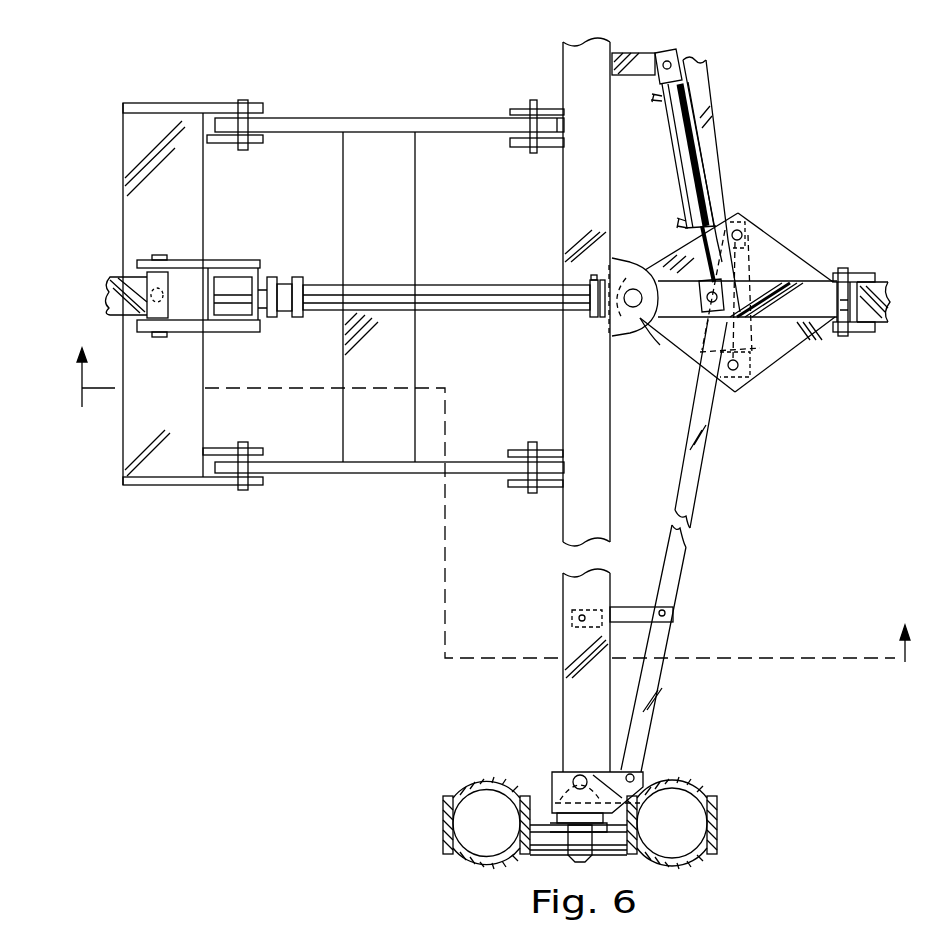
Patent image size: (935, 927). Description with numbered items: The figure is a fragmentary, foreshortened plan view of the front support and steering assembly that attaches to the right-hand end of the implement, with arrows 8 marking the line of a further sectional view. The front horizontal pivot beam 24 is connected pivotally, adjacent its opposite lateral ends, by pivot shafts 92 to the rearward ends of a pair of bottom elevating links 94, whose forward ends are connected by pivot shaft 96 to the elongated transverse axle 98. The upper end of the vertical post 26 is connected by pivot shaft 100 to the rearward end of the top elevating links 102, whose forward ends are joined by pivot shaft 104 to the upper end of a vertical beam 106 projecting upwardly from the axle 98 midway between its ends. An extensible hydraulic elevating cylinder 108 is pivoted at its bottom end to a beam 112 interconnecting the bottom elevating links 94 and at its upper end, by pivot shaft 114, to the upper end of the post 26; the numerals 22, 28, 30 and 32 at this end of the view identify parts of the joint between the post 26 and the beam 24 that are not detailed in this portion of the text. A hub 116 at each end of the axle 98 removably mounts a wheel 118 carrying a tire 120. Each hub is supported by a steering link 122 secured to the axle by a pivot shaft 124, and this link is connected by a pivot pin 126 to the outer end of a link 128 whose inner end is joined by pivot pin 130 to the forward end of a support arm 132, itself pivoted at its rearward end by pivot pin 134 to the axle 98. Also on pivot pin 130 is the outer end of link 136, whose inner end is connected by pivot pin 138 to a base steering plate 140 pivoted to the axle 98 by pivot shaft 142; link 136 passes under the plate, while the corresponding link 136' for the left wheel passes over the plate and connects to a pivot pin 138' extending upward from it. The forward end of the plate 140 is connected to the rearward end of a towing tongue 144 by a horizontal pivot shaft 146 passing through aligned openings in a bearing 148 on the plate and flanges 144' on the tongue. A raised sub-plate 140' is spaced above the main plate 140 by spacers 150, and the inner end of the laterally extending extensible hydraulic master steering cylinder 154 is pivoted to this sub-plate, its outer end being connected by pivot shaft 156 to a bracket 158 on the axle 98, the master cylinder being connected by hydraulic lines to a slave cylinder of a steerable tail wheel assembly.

The section line 8- 8 is at (491, 510).
The pivot pin 22 is at (147, 300).
The front horizontal pivot beam 24 is at (123, 200).
The vertical post 26 is at (252, 275).
The bracket plates 28 is at (200, 260).
The retaining nut 30 is at (152, 256).
The support member 32 is at (110, 290).
The pivot shafts 92 is at (240, 100).
The bottom elevating links 94 is at (308, 118).
The pivot shaft 96 is at (533, 100).
The transverse axle 98 is at (564, 55).
The pivot shaft 100 is at (300, 277).
The top elevating links 102 is at (474, 290).
The pivot shaft 104 is at (592, 266).
The vertical beam 106 is at (590, 304).
The extensible hydraulic elevating cylinder 108 is at (288, 318).
The beam 112 is at (416, 190).
The pivot shaft 114 is at (278, 277).
The hub 116 is at (590, 852).
The wheel 118 is at (552, 852).
The tire 120 is at (443, 822).
The steering link 122 is at (552, 790).
The pivot shaft 124 is at (577, 776).
The pivot pin 126 is at (638, 780).
The link 128 is at (652, 702).
The pivot pin 130 is at (668, 612).
The support arm 132 is at (640, 622).
The pivot pin 134 is at (572, 618).
The link 136 is at (681, 546).
The link 136' is at (725, 184).
The pivot pin 138 is at (737, 292).
The pivot pin 138' is at (751, 382).
The base steering plate 140 is at (747, 272).
The raised sub-plate 140' is at (647, 353).
The pivot shaft 142 is at (645, 318).
The towing tongue 144 is at (895, 292).
The flanges 144' is at (869, 294).
The horizontal pivot shaft 146 is at (843, 268).
The bearing 148 is at (832, 320).
The spacers 150 is at (688, 362).
The extensible hydraulic master steering cylinder 154 is at (672, 165).
The pivot shaft 156 is at (678, 60).
The bracket 158 is at (630, 58).